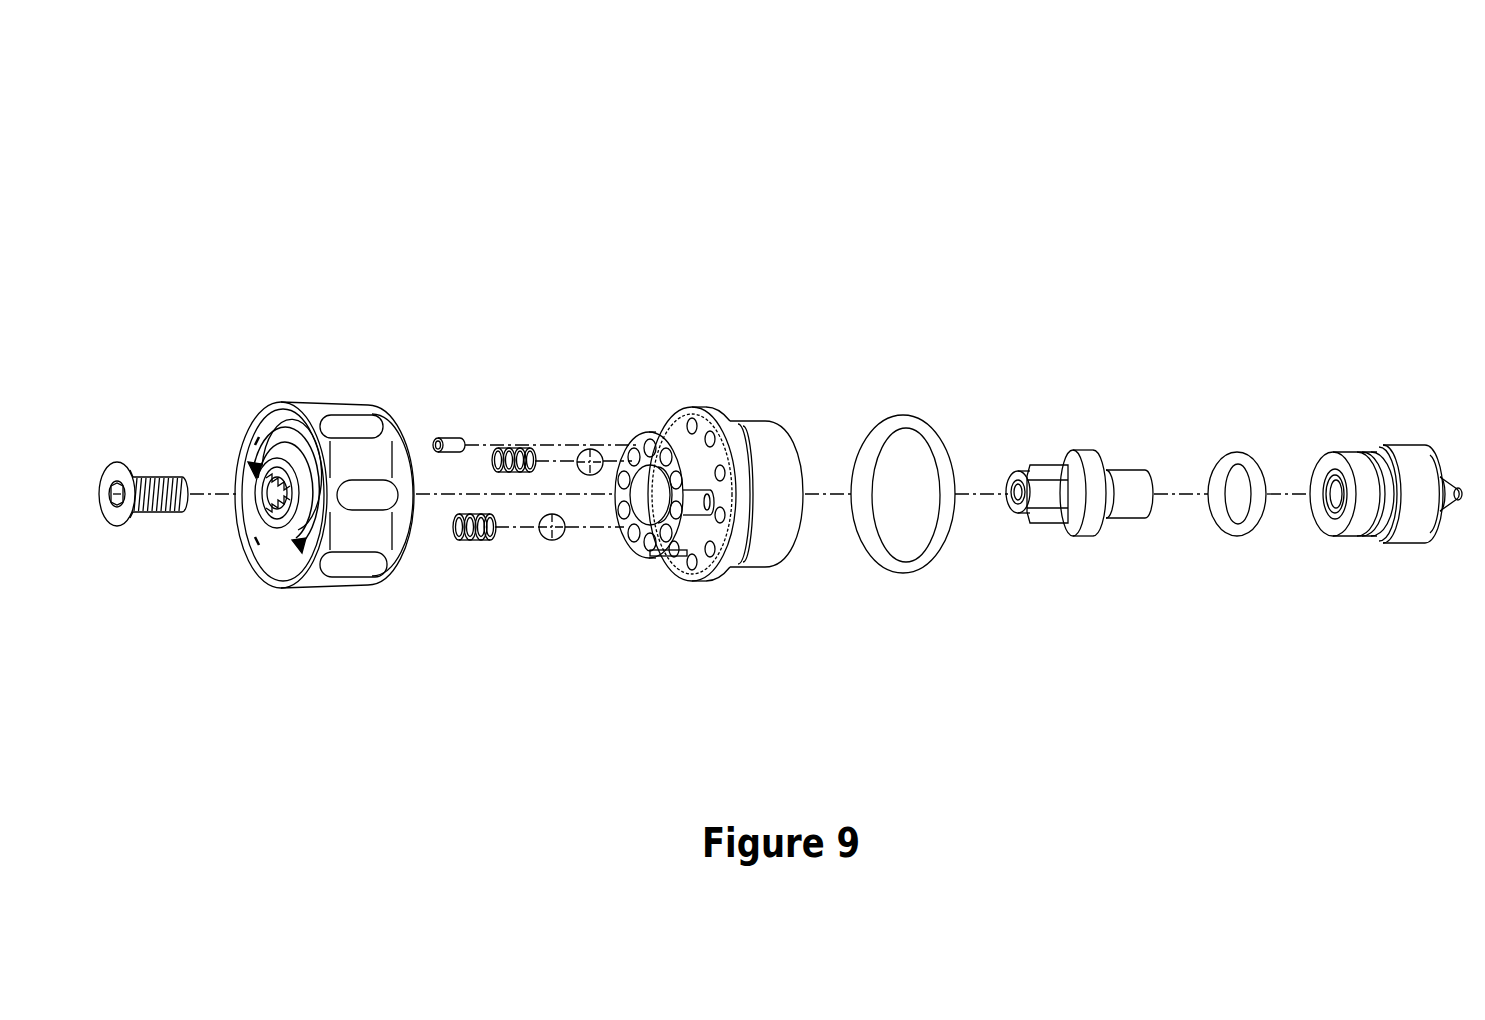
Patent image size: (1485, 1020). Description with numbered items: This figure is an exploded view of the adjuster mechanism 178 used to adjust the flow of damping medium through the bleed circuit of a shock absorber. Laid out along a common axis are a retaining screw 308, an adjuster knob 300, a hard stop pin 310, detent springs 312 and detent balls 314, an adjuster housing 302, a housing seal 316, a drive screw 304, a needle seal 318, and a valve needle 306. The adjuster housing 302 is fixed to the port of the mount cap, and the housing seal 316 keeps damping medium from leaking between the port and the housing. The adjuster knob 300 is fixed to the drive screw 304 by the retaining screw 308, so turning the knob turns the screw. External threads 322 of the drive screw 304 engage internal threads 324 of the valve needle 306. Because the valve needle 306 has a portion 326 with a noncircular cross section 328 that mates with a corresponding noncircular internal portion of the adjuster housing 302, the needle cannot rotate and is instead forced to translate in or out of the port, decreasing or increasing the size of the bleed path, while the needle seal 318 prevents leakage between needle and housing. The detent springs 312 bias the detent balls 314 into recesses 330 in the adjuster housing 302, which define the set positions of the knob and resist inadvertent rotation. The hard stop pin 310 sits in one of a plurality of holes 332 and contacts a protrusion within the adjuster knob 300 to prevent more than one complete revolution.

The adjuster mechanism 178 is at (348, 60).
The adjuster knob 300 is at (310, 402).
The adjuster housing 302 is at (692, 407).
The drive screw 304 is at (1079, 526).
The valve needle 306 is at (1372, 477).
The retaining screw 308 is at (118, 462).
The hard stop pin 310 is at (438, 438).
The detent springs 312 is at (508, 440).
The detent balls 314 is at (585, 440).
The housing seal 316 is at (913, 417).
The needle seal 318 is at (1245, 450).
The external threads 322 is at (1128, 502).
The internal threads 324 is at (1335, 497).
The portion 326 is at (1420, 520).
The noncircular cross section 328 is at (1423, 460).
The recesses 330 is at (645, 540).
The holes 332 is at (688, 430).